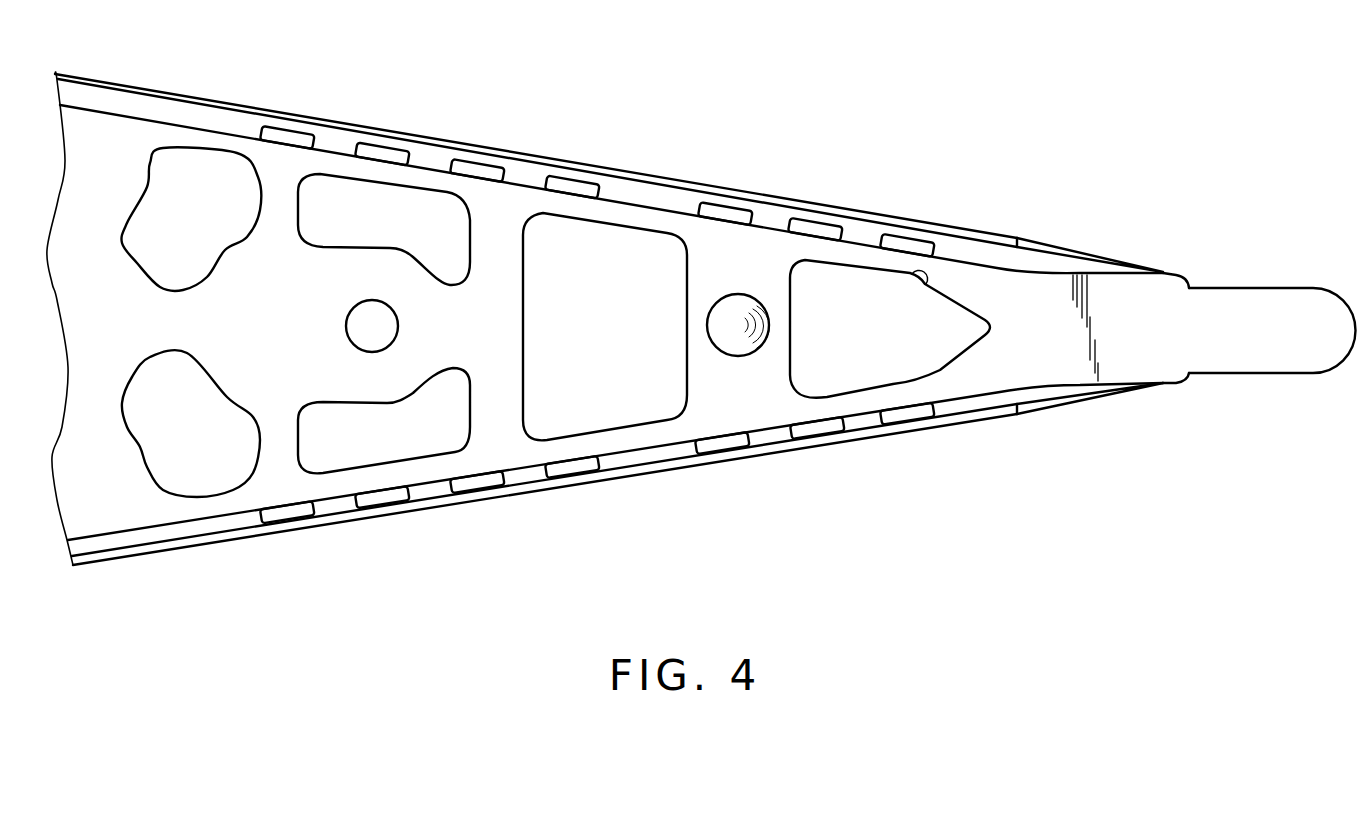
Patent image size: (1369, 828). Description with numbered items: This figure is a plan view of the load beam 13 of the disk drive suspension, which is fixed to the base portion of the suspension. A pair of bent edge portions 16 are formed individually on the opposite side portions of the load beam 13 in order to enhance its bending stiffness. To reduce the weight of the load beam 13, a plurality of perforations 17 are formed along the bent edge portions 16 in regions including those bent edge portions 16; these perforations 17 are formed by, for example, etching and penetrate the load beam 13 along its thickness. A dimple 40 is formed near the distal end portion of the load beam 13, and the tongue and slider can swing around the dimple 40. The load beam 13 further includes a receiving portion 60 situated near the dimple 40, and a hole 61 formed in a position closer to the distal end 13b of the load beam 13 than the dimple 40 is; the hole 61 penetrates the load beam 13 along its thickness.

The load beam 13 is at (668, 175).
The distal end 13b is at (1352, 318).
The bent edge portions 16 is at (428, 152).
The perforations 17 is at (378, 150).
The dimple 40 is at (742, 312).
The receiving portion 60 is at (785, 331).
The hole 61 is at (942, 286).